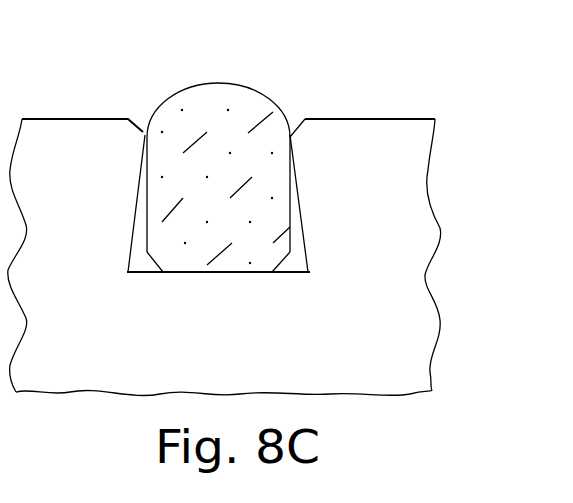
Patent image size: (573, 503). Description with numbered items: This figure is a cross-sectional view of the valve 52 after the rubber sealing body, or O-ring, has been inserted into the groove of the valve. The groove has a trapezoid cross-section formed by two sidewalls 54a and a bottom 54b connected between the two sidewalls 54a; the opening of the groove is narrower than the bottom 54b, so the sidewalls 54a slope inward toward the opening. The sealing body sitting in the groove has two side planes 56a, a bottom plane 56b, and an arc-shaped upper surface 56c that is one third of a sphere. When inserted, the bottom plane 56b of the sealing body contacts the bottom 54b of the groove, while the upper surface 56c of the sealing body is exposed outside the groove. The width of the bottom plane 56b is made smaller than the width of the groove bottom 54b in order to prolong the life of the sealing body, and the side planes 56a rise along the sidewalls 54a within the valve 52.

The valve 52 is at (410, 305).
The sidewalls 54a is at (140, 190).
The bottom 54b is at (227, 273).
The side planes 56a is at (145, 220).
The bottom plane 56b is at (218, 262).
The upper surface 56c is at (185, 85).